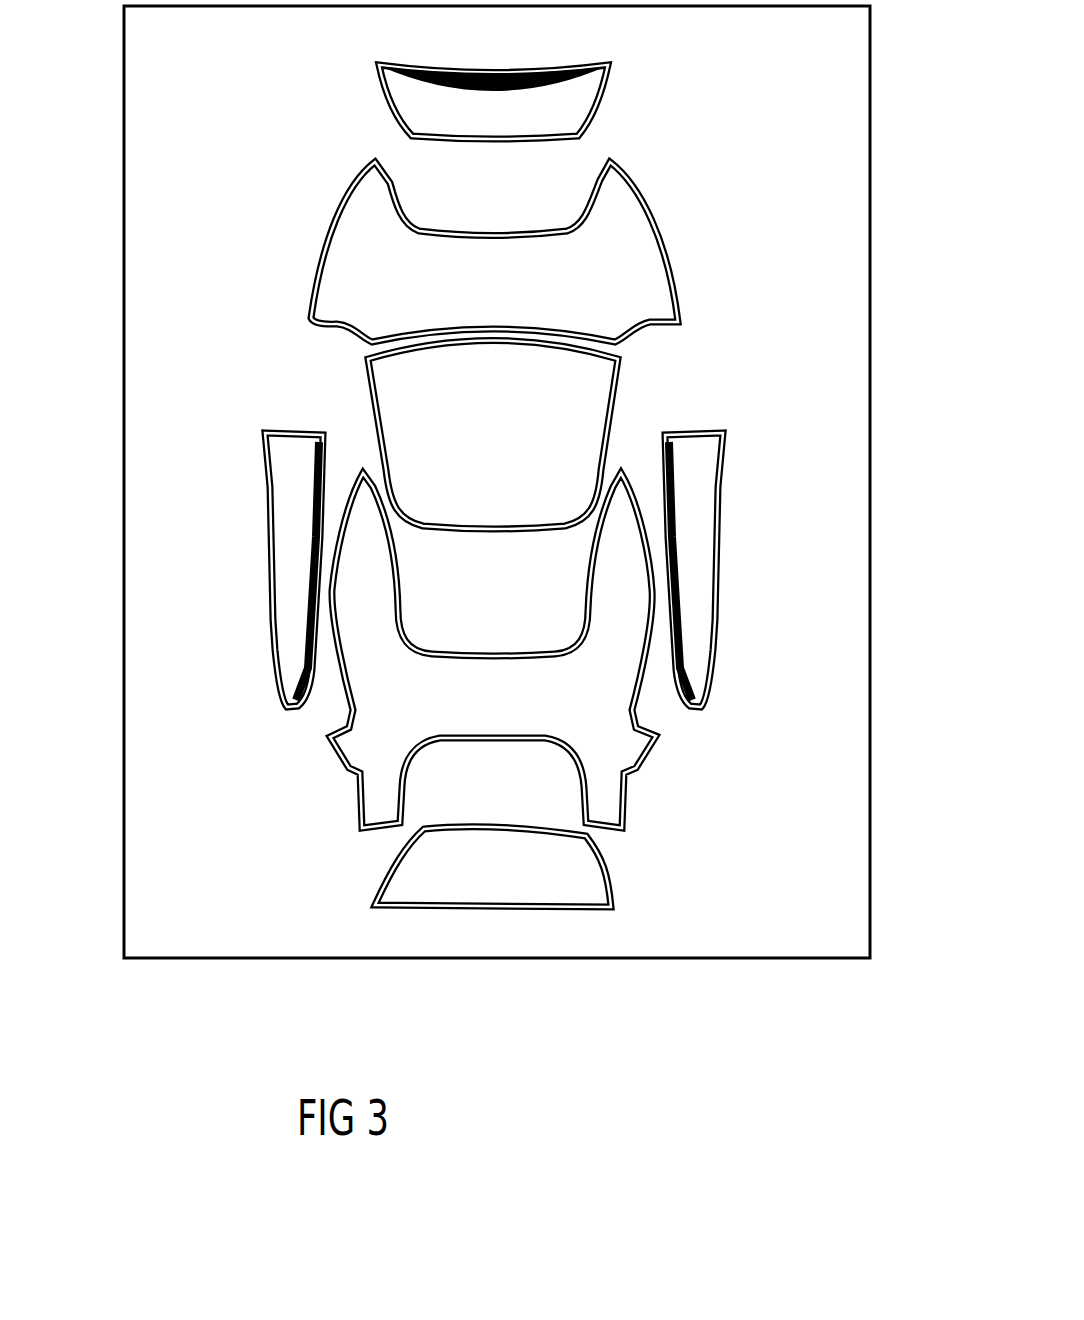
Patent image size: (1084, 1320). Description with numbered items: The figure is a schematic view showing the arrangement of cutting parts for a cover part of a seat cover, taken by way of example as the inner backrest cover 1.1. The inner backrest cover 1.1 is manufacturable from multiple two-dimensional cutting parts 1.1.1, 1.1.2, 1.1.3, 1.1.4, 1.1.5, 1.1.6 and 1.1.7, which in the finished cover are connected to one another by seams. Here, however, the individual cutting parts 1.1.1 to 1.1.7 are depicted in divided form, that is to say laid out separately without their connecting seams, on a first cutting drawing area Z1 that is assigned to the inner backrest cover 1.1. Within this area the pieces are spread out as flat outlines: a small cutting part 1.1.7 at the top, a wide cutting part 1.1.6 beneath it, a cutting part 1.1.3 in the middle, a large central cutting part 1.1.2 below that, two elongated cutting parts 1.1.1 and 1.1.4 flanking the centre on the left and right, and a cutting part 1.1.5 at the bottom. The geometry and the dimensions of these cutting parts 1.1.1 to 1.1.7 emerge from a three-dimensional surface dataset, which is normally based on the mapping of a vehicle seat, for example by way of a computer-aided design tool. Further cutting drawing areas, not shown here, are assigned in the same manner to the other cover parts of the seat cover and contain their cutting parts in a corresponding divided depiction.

The inner backrest cover 1.1 is at (290, 130).
The cutting part 1.1.1 is at (286, 571).
The cutting part 1.1.2 is at (357, 745).
The cutting part 1.1.3 is at (598, 400).
The cutting part 1.1.4 is at (696, 522).
The cutting part 1.1.5 is at (398, 880).
The cutting part 1.1.6 is at (643, 262).
The cutting part 1.1.7 is at (590, 83).
The first cutting drawing area Z1 is at (720, 958).